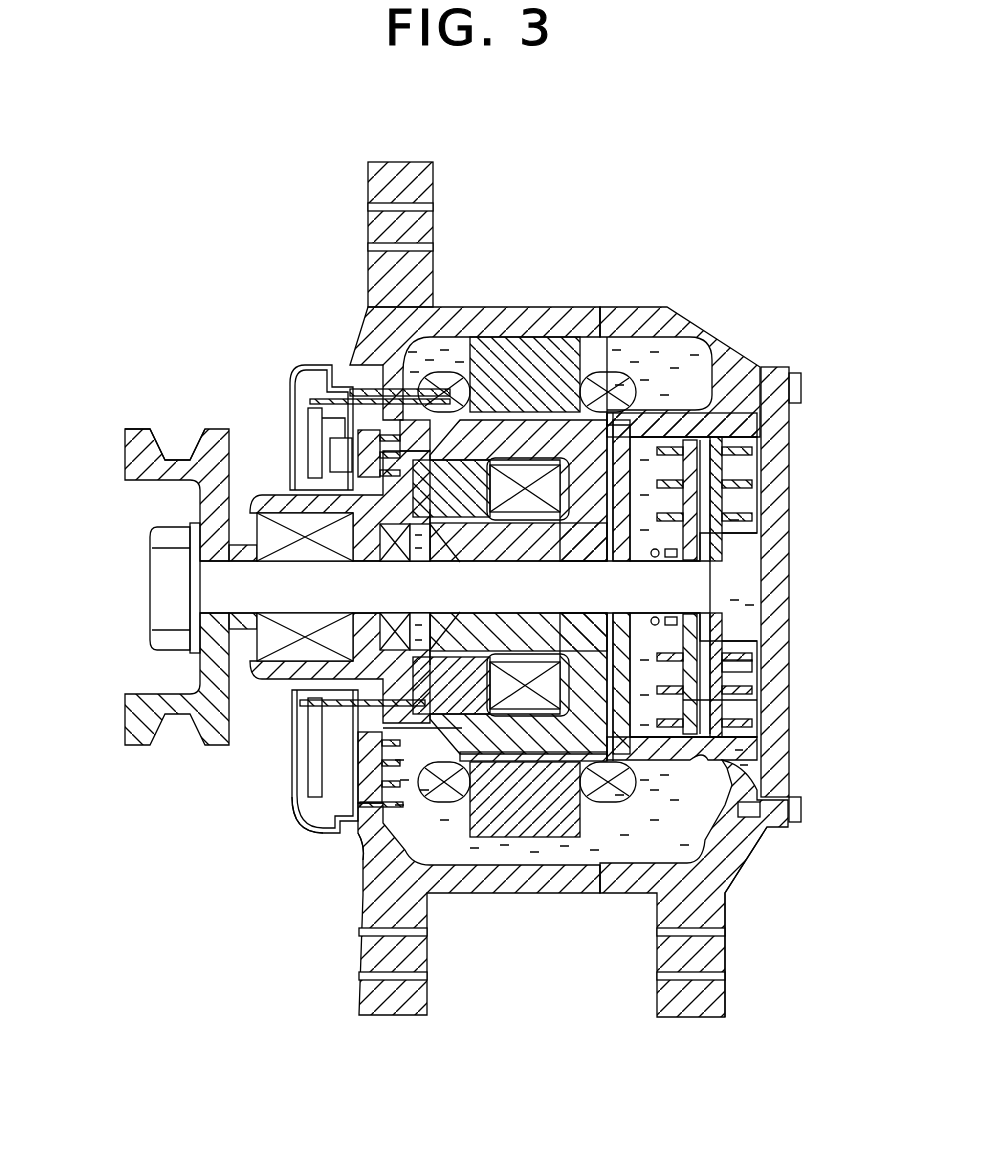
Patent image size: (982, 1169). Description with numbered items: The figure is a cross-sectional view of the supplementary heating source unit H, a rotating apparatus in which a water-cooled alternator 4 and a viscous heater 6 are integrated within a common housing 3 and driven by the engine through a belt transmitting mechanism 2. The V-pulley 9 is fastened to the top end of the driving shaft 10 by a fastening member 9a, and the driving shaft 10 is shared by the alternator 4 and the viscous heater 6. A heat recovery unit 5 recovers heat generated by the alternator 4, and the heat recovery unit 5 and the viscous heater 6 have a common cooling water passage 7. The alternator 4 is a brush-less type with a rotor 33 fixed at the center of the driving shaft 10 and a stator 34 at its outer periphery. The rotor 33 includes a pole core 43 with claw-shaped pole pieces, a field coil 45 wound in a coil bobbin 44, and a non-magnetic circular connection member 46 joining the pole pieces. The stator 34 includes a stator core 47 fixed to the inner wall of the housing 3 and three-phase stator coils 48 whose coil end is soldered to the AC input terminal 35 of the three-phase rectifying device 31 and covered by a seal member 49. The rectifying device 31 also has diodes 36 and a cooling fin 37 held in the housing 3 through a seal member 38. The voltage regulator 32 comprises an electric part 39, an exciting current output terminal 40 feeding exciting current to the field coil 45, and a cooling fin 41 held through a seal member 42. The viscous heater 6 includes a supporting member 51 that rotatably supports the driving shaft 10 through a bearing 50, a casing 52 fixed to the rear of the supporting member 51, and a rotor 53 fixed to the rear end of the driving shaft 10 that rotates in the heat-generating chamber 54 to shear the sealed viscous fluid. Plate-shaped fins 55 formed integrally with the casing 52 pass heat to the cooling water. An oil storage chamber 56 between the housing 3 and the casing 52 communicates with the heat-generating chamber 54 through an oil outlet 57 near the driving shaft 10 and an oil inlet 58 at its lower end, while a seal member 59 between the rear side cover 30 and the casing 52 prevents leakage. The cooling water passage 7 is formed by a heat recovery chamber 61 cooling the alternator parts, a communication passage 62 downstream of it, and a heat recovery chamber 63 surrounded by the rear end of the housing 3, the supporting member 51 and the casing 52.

The supplementary heating source unit H is at (195, 275).
The belt transmitting mechanism 2 is at (133, 757).
The housing 3 is at (540, 690).
The water-cooled alternator 4 is at (542, 300).
The heat recovery unit 5 is at (612, 300).
The viscous heater 6 is at (727, 413).
The cooling water passage 7 is at (753, 852).
The V-pulley 9 is at (125, 429).
The fastening member 9a is at (165, 543).
The driving shaft 10 is at (220, 598).
The rear side cover 30 is at (777, 430).
The three-phase rectifying device 31 is at (303, 378).
The voltage regulator 32 is at (300, 817).
The rotor 33 is at (608, 395).
The stator 34 is at (460, 835).
The AC input terminal 35 is at (312, 418).
The diodes 36 is at (337, 447).
The cooling fin 37 is at (367, 462).
The seal member 38 is at (347, 440).
The electric part 39 is at (310, 807).
The exciting current output terminal 40 is at (320, 712).
The cooling fin 41 is at (330, 778).
The seal member 42 is at (367, 768).
The pole core 43 is at (590, 735).
The coil bobbin 44 is at (545, 740).
The field coil 45 is at (505, 730).
The circular connection member 46 is at (515, 705).
The stator core 47 is at (515, 357).
The three-phase stator coils 48 is at (450, 387).
The seal member 49 is at (395, 390).
The bearing 50 is at (705, 440).
The supporting member 51 is at (652, 545).
The casing 52 is at (717, 730).
The rotor 53 is at (703, 480).
The heat-generating chamber 54 is at (737, 702).
The plate-shaped fins 55 is at (743, 683).
The oil storage chamber 56 is at (750, 582).
The oil outlet 57 is at (717, 547).
The oil inlet 58 is at (717, 628).
The seal member 59 is at (740, 523).
The heat recovery chamber 61 is at (370, 843).
The communication passage 62 is at (730, 773).
The heat recovery chamber 63 is at (743, 670).